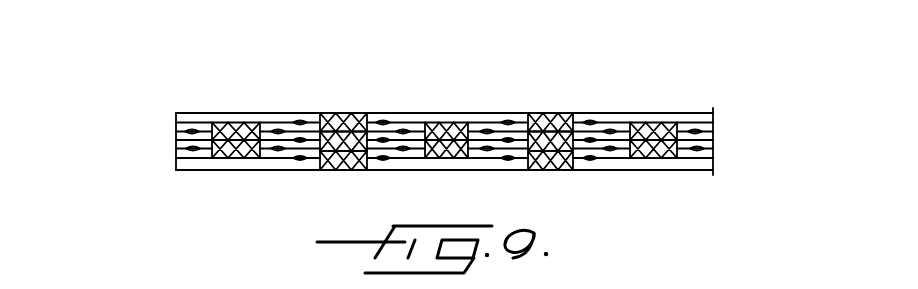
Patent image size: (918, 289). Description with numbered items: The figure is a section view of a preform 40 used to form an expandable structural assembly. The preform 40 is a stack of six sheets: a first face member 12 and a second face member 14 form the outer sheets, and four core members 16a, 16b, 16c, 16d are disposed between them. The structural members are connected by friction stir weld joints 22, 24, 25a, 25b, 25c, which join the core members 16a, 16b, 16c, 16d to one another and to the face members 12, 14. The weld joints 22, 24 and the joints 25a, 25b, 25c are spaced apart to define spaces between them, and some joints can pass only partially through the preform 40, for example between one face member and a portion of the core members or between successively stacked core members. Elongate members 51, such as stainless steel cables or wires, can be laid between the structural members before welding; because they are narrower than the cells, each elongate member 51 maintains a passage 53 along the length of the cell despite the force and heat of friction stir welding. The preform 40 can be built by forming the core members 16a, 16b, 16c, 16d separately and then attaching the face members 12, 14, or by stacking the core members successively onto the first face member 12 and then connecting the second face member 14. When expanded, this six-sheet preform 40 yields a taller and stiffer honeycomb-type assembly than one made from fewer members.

The preform 40 is at (718, 89).
The first face member 12 is at (216, 113).
The second face member 14 is at (195, 171).
The core member 16a is at (176, 132).
The core member 16b is at (176, 138).
The core member 16c is at (176, 145).
The core member 16d is at (176, 153).
The first weld joint 22 is at (342, 104).
The second weld joint 24 is at (343, 180).
The weld joint 25a is at (448, 111).
The weld joint 25b is at (306, 113).
The weld joint 25c is at (455, 170).
The elongate member 51 is at (607, 127).
The passage 53 is at (629, 114).